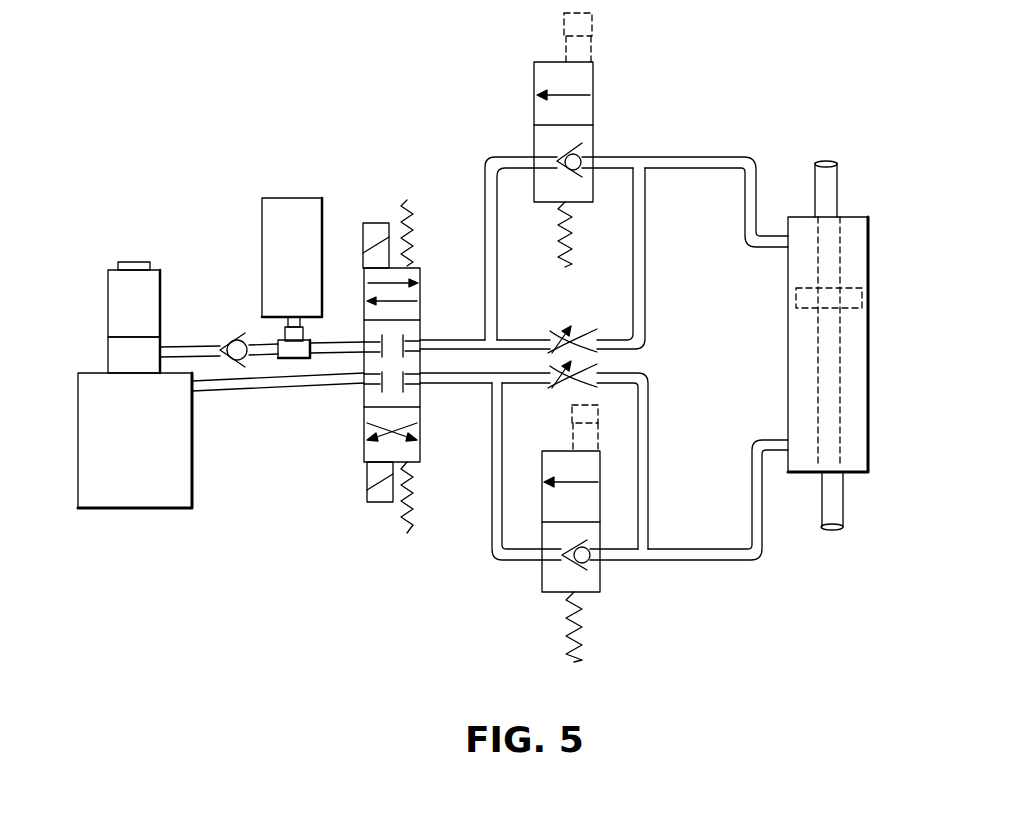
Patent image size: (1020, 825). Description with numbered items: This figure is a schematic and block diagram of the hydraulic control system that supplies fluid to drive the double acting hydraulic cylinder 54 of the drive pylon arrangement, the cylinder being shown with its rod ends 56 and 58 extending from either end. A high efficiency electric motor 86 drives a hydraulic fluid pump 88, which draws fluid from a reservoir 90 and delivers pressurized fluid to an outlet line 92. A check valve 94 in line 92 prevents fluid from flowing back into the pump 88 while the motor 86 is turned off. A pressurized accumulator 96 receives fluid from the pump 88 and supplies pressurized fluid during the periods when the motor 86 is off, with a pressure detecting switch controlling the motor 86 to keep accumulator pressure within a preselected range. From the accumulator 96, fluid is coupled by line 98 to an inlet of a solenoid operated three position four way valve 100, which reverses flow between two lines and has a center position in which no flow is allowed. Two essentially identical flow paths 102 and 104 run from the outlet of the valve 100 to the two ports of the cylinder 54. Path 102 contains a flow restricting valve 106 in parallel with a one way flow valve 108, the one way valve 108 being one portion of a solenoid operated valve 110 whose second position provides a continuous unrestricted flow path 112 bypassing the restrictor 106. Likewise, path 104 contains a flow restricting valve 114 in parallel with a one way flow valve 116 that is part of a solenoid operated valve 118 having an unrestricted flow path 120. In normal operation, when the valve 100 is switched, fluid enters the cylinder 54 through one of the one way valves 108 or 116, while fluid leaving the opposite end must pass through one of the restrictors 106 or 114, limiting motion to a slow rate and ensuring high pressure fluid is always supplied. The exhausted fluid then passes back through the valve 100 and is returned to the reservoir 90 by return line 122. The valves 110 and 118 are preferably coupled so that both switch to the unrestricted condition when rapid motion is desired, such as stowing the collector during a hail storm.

The hydraulic cylinder 54 is at (803, 343).
The upper piston rod 56 is at (826, 187).
The lower piston rod 58 is at (833, 492).
The electric motor 86 is at (140, 316).
The hydraulic fluid pump 88 is at (140, 362).
The reservoir 90 is at (140, 454).
The outlet line 92 is at (186, 348).
The check valve 94 is at (231, 336).
The pressurized accumulator 96 is at (298, 237).
The line 98 is at (344, 350).
The three position four way valve 100 is at (420, 327).
The flow path 102 is at (556, 140).
The flow path 104 is at (539, 533).
The flow restricting valve 106 is at (580, 335).
The one way flow valve 108 is at (583, 151).
The solenoid operated valve 110 is at (593, 116).
The unrestricted flow path 112 is at (584, 92).
The flow restricting valve 114 is at (566, 385).
The one way flow valve 116 is at (592, 565).
The solenoid operated valve 118 is at (544, 577).
The unrestricted flow path 120 is at (557, 485).
The return line 122 is at (280, 386).